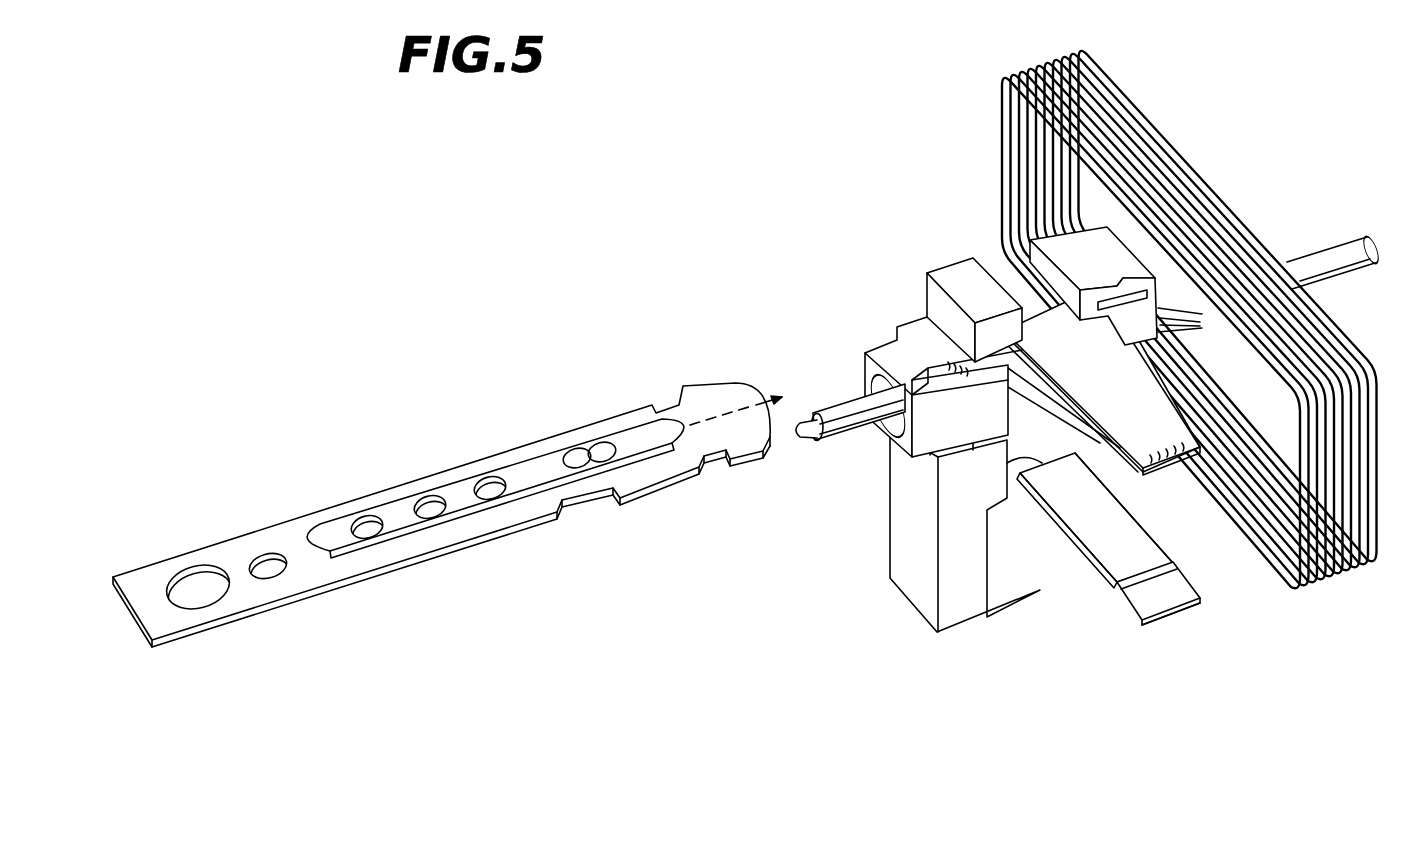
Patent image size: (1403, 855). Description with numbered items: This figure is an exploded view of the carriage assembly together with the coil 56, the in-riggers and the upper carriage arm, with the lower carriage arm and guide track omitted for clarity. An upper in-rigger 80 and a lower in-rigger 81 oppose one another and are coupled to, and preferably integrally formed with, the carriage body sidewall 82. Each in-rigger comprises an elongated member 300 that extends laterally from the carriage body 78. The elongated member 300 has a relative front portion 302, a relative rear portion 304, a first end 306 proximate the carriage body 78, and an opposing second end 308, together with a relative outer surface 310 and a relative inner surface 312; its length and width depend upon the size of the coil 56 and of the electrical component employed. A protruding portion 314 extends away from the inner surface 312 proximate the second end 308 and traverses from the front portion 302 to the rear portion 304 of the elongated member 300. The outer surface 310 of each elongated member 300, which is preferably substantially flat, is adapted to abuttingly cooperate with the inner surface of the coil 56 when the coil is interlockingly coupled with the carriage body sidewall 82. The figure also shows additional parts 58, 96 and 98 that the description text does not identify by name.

The coil 56 is at (1153, 173).
The mounting plate 58 is at (283, 535).
The carriage body 78 is at (945, 262).
The upper in-rigger 80 is at (1180, 412).
The lower in-rigger 81 is at (1153, 607).
The carriage body sidewall 82 is at (1020, 573).
The rod 96 is at (882, 432).
The guide pin 98 is at (1160, 313).
The elongated member 300 is at (1149, 586).
The relative front portion 302 is at (1080, 552).
The relative rear portion 304 is at (1197, 578).
The first end 306 is at (1007, 463).
The second end 308 is at (1147, 602).
The relative outer surface 310 is at (1108, 400).
The relative inner surface 312 is at (1105, 523).
The protruding portion 314 is at (1140, 568).